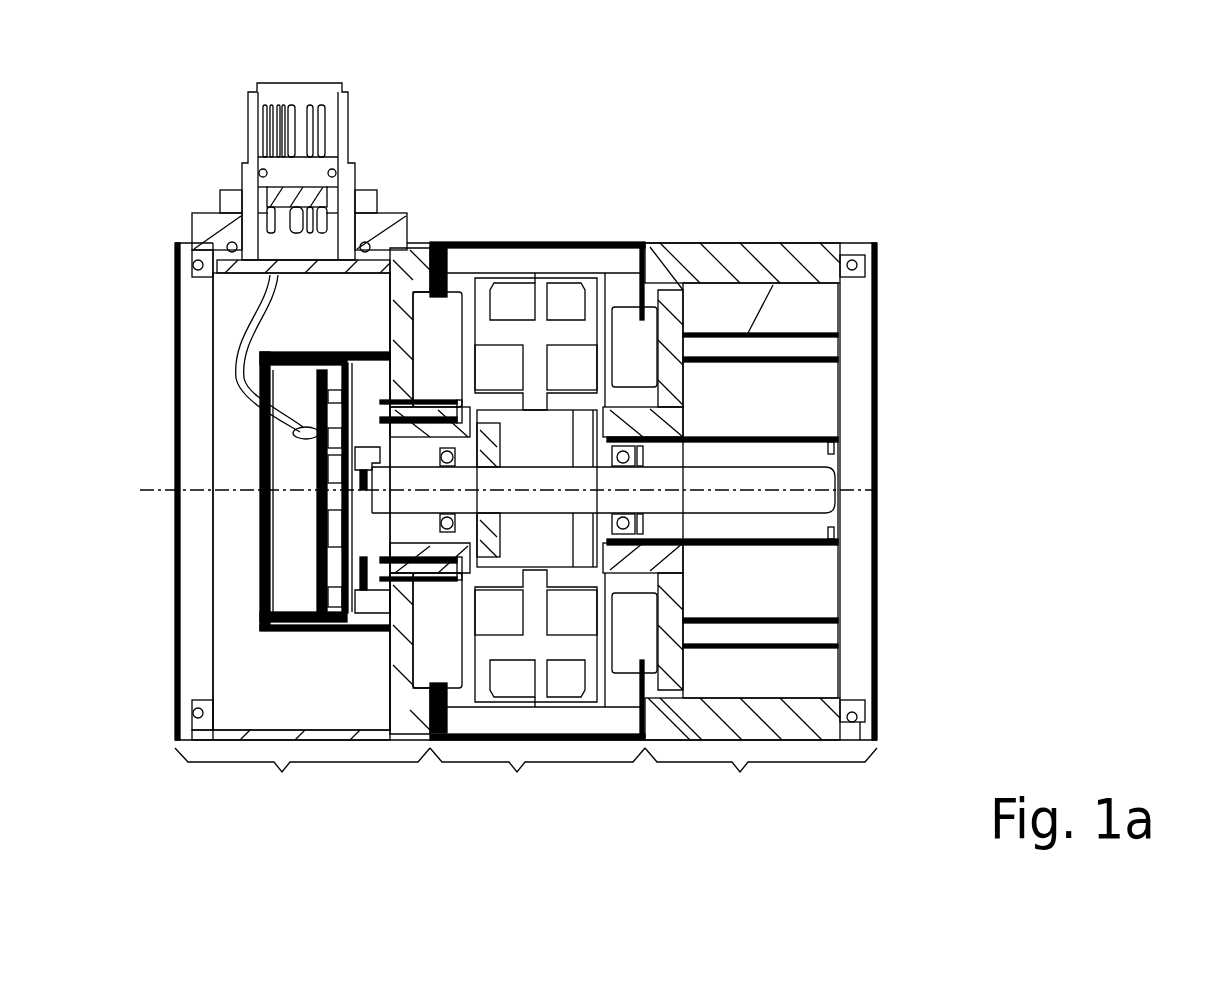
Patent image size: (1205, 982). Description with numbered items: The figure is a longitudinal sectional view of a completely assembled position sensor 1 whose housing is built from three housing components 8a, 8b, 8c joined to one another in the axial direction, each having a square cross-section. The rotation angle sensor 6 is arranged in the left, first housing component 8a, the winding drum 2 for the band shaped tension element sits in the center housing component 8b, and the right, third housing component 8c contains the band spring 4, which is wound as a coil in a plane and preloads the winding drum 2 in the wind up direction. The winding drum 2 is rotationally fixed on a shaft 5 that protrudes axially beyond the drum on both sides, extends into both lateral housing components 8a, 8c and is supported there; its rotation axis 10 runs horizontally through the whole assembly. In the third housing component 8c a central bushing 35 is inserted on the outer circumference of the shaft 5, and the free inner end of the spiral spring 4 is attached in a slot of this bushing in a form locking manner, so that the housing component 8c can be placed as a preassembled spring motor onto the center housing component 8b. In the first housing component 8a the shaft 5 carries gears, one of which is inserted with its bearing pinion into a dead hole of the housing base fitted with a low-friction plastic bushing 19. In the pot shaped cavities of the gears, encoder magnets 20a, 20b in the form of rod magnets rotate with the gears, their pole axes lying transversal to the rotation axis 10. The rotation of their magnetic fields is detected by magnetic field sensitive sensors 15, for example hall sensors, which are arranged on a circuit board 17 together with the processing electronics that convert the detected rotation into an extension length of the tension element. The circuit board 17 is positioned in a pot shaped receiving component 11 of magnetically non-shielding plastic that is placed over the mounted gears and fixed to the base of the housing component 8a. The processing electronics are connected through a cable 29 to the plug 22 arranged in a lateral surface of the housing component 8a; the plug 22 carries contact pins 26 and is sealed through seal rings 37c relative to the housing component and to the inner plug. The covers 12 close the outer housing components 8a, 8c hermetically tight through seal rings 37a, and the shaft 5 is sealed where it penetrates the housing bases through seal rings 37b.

The position sensor 1 is at (576, 142).
The winding drum 2 is at (548, 330).
The band spring 4 is at (785, 362).
The shaft 5 is at (693, 500).
The rotation angle sensor 6 is at (298, 650).
The first housing component 8a is at (302, 774).
The center housing component 8b is at (537, 774).
The third housing component 8c is at (761, 774).
The rotation axis 10 is at (140, 490).
The receiving component 11 is at (320, 352).
The covers 12 is at (190, 360).
The magnetic field sensitive sensor 15 is at (333, 575).
The circuit board 17 is at (333, 467).
The plastic bushing 19 is at (423, 580).
The encoder magnet 20a is at (362, 460).
The encoder magnet 20b is at (363, 590).
The plug 22 is at (242, 163).
The contact pins 26 is at (293, 103).
The cable 29 is at (241, 382).
The central bushing 35 is at (703, 450).
The seal ring 37a is at (195, 263).
The seal ring 37b is at (606, 532).
The seal ring 37c is at (367, 245).